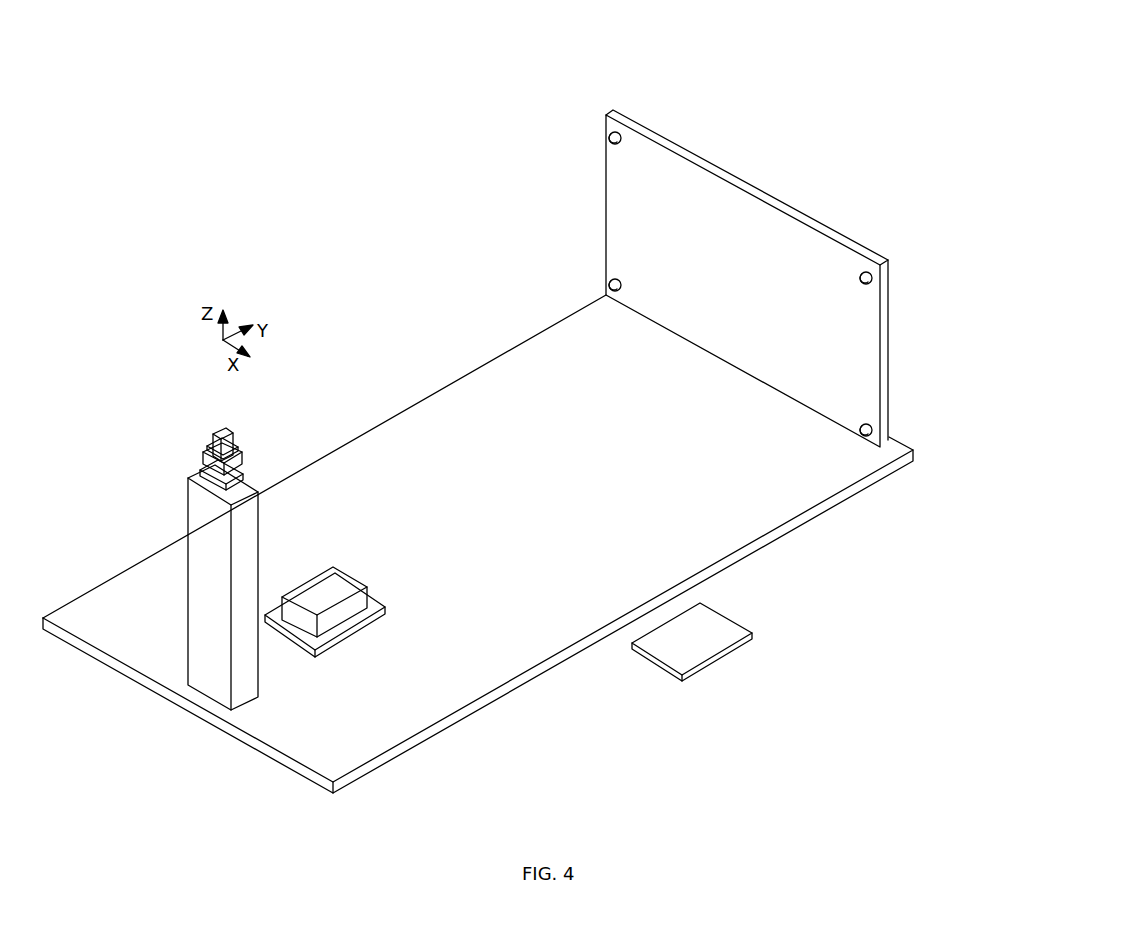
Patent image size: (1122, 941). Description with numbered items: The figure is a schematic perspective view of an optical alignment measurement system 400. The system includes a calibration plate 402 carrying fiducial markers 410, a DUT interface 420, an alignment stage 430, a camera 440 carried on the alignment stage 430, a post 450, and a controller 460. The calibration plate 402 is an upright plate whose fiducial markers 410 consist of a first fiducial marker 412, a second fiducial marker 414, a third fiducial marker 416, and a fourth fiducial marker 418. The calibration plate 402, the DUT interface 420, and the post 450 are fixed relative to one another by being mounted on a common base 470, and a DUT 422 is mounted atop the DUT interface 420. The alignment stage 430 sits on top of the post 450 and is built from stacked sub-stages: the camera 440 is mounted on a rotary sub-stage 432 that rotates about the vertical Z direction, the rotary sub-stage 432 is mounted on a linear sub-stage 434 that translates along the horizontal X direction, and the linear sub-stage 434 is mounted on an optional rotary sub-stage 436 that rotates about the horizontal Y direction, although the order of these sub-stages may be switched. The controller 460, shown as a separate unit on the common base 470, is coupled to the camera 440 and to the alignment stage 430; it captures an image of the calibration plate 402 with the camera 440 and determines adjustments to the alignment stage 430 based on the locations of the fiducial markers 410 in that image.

The optical alignment measurement system 400 is at (292, 95).
The calibration plate 402 is at (620, 196).
The fiducial markers 410 is at (857, 402).
The first fiducial marker 412 is at (609, 138).
The second fiducial marker 414 is at (872, 430).
The third fiducial marker 416 is at (872, 278).
The fourth fiducial marker 418 is at (609, 286).
The DUT interface 420 is at (355, 630).
The DUT 422 is at (340, 588).
The alignment stage 430 is at (268, 444).
The rotary sub-stage 432 is at (210, 452).
The linear sub-stage 434 is at (212, 470).
The rotary sub-stage 436 is at (205, 480).
The camera 440 is at (218, 440).
The post 450 is at (204, 570).
The controller 460 is at (705, 640).
The common base 470 is at (782, 510).